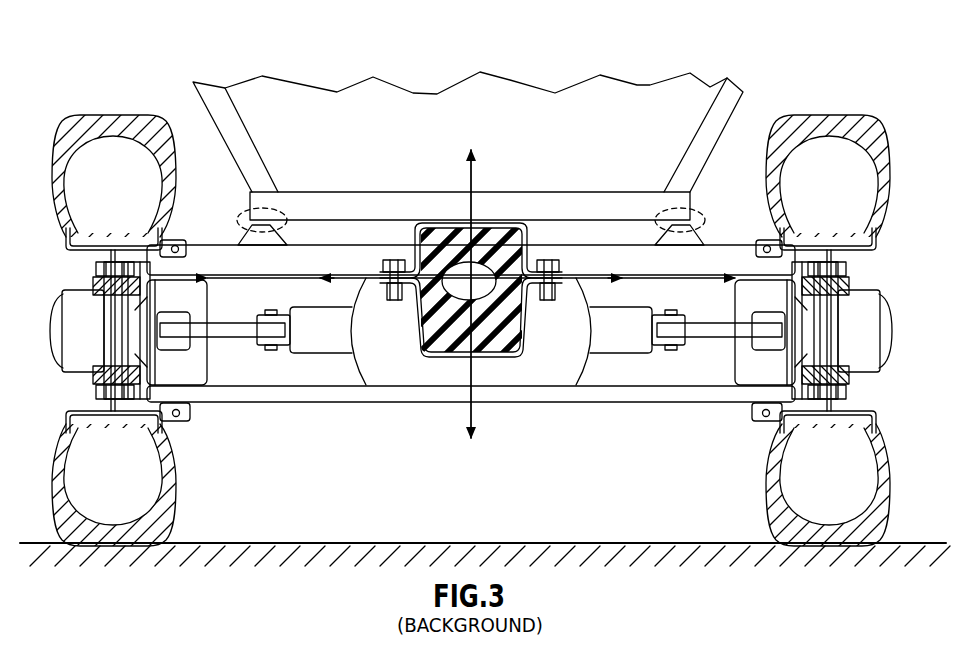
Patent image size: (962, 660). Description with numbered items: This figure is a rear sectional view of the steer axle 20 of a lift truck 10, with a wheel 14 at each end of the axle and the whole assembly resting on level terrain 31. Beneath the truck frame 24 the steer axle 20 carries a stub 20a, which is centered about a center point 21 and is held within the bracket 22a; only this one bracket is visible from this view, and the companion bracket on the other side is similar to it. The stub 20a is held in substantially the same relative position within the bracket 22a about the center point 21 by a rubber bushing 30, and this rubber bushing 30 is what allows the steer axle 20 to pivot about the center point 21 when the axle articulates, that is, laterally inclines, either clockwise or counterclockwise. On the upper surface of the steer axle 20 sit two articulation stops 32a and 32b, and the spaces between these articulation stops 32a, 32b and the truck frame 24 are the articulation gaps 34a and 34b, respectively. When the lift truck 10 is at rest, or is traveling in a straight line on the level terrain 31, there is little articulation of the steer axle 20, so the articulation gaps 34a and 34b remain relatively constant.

The lift truck 10 is at (502, 125).
The wheel 14 is at (126, 107).
The steer axle 20 is at (208, 256).
The stub 20a is at (468, 290).
The center point 21 is at (424, 241).
The bracket 22a is at (450, 358).
The truck frame 24 is at (703, 144).
The rubber bushing 30 is at (498, 334).
The level terrain 31 is at (473, 542).
The articulation stop 32a is at (265, 243).
The articulation stop 32b is at (679, 243).
The articulation gap 34a is at (236, 213).
The articulation gap 34b is at (704, 213).